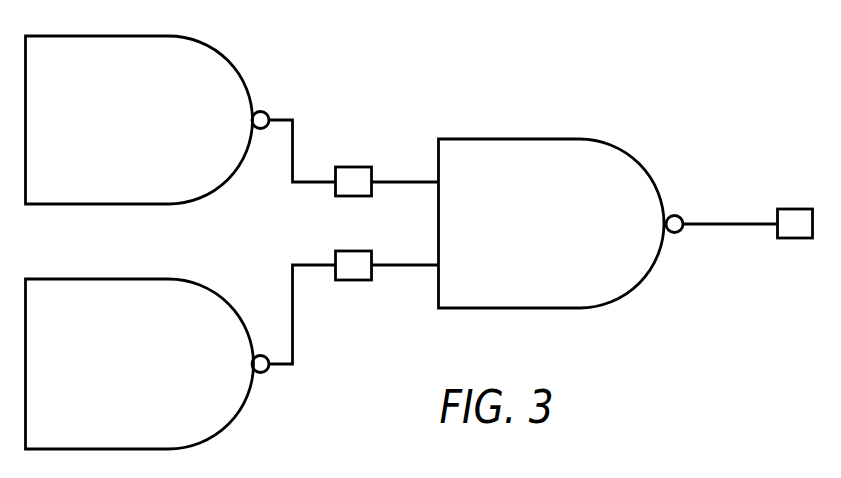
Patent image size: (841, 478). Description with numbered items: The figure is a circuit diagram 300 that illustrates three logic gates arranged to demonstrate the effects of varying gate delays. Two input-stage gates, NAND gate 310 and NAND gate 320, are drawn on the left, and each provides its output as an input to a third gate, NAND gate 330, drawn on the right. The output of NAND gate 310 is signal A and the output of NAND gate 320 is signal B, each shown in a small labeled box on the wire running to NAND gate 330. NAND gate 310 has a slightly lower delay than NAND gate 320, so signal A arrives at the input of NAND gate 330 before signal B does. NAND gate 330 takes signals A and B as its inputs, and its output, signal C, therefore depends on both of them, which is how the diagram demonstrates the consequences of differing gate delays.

The circuit diagram 300 is at (334, 86).
The NAND gate 310 is at (99, 146).
The NAND gate 320 is at (104, 389).
The NAND gate 330 is at (522, 266).